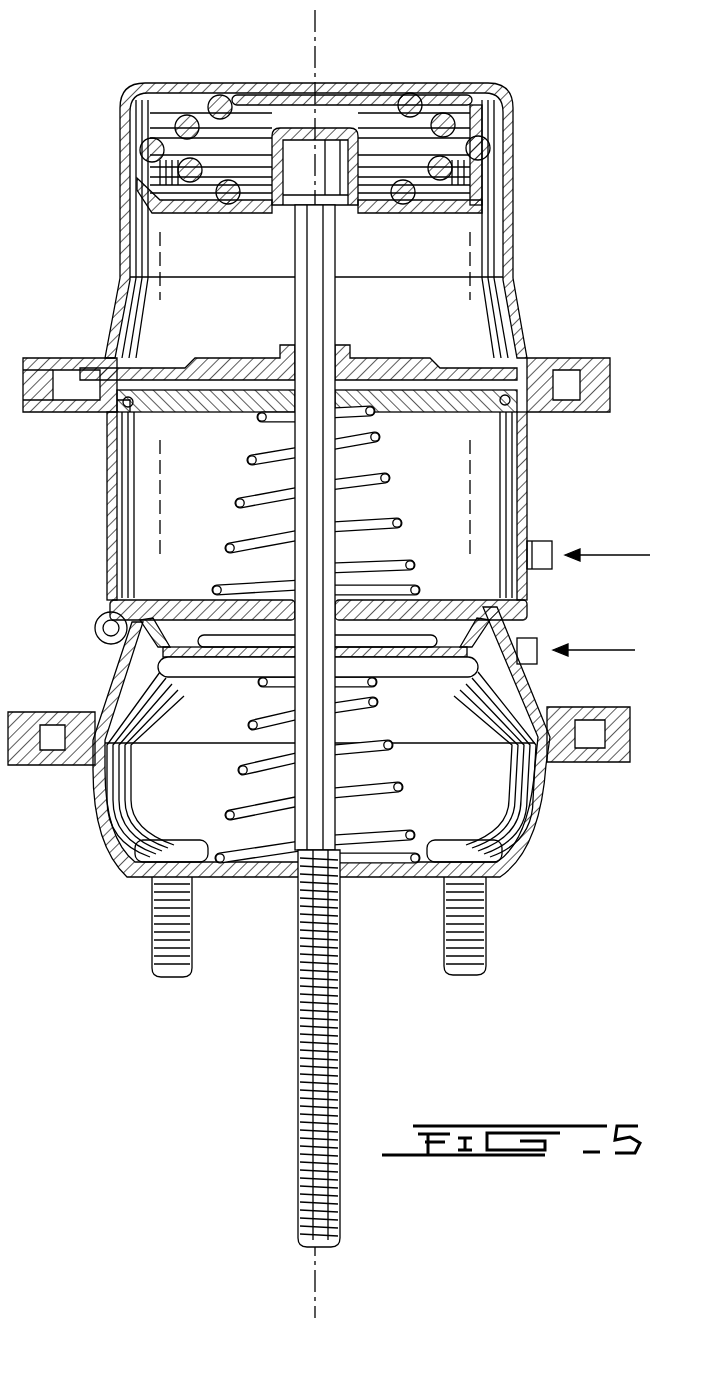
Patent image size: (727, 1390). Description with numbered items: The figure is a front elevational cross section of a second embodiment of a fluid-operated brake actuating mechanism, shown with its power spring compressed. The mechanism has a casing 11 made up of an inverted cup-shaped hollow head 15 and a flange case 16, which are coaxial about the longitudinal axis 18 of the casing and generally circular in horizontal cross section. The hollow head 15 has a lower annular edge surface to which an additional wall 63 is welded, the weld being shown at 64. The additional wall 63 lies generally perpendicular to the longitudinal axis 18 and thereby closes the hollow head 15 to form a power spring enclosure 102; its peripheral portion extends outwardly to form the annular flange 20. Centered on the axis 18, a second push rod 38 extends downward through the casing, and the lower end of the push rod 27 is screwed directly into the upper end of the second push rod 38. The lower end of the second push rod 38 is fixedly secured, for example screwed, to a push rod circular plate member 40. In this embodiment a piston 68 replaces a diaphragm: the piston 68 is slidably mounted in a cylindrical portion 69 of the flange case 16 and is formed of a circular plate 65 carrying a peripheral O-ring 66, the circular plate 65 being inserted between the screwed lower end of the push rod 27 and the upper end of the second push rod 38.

The casing 11 is at (112, 190).
The inverted cup-shaped hollow head 15 is at (515, 190).
The flange case 16 is at (105, 568).
The longitudinal axis 18 is at (316, 46).
The annular flange 20 is at (575, 362).
The push rod 27 is at (325, 238).
The second push rod 38 is at (325, 507).
The push rod circular plate member 40 is at (435, 630).
The additional wall 63 is at (422, 357).
The weld 64 is at (103, 365).
The circular plate 65 is at (438, 410).
The peripheral O-ring 66 is at (118, 410).
The piston 68 is at (200, 420).
The cylindrical portion 69 is at (110, 515).
The power spring enclosure 102 is at (513, 233).